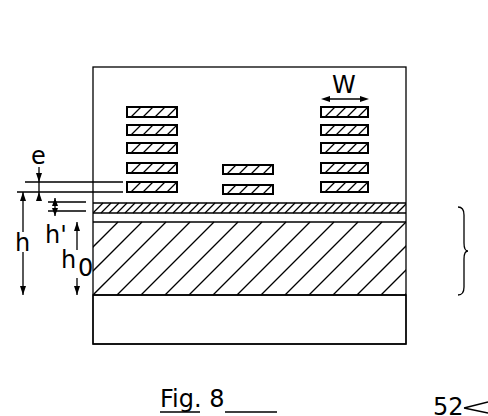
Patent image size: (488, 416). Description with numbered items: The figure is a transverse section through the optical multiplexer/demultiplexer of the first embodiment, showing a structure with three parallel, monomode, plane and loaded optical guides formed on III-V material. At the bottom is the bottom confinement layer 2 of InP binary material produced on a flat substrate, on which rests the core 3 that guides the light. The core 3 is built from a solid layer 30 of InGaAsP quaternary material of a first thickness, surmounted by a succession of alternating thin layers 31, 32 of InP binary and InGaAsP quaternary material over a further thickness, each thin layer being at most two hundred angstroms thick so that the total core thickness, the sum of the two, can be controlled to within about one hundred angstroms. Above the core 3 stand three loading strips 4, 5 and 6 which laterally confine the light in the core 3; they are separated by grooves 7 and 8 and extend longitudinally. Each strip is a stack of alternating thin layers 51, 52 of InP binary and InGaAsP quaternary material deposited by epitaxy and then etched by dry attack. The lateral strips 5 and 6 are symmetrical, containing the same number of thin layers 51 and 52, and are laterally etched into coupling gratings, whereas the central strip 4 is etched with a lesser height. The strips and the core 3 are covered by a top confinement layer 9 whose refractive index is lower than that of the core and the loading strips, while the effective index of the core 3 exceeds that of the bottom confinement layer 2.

The bottom confinement layer 2 is at (293, 334).
The core 3 is at (472, 251).
The solid layer 30 is at (385, 255).
The thin layer 31 is at (400, 221).
The thin layer 32 is at (405, 208).
The central strip 4 is at (246, 144).
The lateral strip 5 is at (353, 95).
The lateral strip 6 is at (152, 92).
The groove 7 is at (306, 190).
The groove 8 is at (205, 188).
The top confinement layer 9 is at (211, 101).
The thin layer 51 is at (272, 200).
The thin layer 52 is at (224, 178).